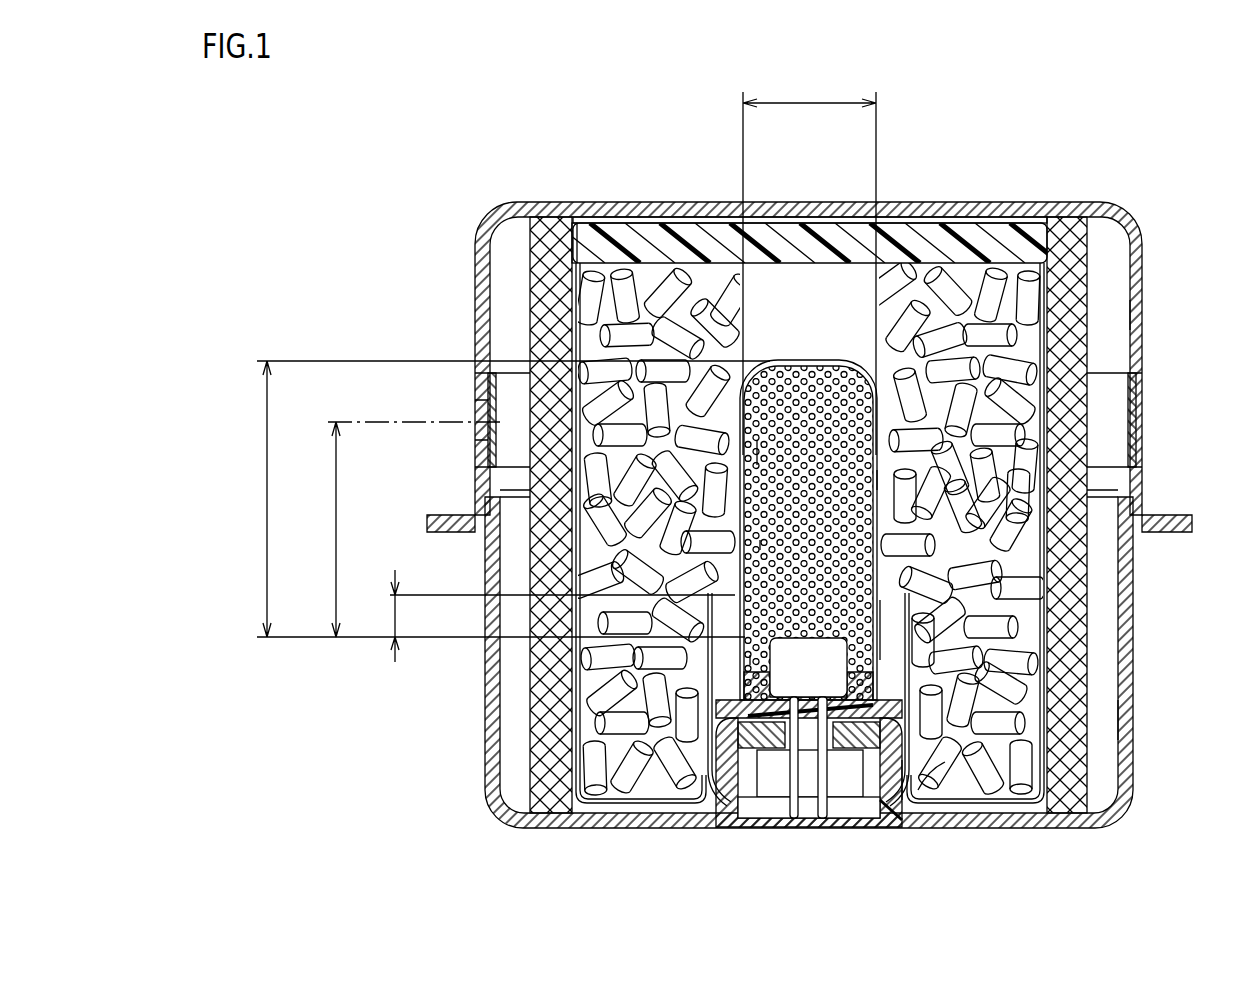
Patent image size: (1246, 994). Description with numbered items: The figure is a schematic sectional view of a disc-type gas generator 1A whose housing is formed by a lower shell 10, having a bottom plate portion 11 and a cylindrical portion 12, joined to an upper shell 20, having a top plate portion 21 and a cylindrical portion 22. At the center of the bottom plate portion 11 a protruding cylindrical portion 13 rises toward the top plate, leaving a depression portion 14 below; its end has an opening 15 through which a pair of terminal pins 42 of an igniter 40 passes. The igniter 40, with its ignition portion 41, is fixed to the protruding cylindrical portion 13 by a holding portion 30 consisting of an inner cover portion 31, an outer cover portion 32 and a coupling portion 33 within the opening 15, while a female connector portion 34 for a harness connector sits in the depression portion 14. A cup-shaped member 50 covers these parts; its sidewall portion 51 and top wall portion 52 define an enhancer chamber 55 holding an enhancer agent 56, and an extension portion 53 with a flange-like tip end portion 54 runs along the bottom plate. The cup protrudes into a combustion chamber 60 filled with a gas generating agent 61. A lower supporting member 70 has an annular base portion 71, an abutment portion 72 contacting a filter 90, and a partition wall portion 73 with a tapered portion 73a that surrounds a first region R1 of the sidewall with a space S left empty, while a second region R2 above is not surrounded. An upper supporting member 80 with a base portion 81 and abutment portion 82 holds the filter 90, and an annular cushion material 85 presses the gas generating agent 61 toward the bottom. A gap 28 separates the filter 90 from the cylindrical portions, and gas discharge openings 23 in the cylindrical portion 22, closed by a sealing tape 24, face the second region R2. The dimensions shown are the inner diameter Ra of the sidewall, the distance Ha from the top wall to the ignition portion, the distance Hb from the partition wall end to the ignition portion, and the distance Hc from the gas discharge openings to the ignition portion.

The disc-type gas generator 1A is at (458, 140).
The lower shell 10 is at (1146, 831).
The bottom plate portion 11 is at (1028, 830).
The cylindrical portion 12 is at (1128, 722).
The protruding cylindrical portion 13 is at (745, 805).
The depression portion 14 is at (758, 790).
The opening 15 is at (828, 790).
The upper shell 20 is at (1153, 206).
The top plate portion 21 is at (1020, 210).
The cylindrical portion 22 is at (1135, 316).
The gas discharge openings 23 is at (1136, 424).
The sealing tape 24 is at (1130, 375).
The gap 28 is at (515, 748).
The holding portion 30 is at (958, 794).
The inner cover portion 31 is at (870, 693).
The outer cover portion 32 is at (878, 805).
The coupling portion 33 is at (798, 790).
The female connector portion 34 is at (845, 790).
The igniter 40 is at (888, 575).
The ignition portion 41 is at (830, 665).
The terminal pins 42 is at (780, 780).
The cup-shaped member 50 is at (809, 428).
The sidewall portion 51 is at (890, 477).
The top wall portion 52 is at (815, 355).
The extension portion 53 is at (955, 770).
The tip end portion 54 is at (930, 800).
The enhancer chamber 55 is at (757, 452).
The enhancer agent 56 is at (852, 378).
The combustion chamber 60 is at (806, 468).
The gas generating agent 61 is at (952, 293).
The lower supporting member 70 is at (731, 575).
The base portion 71 is at (628, 805).
The abutment portion 72 is at (575, 783).
The partition wall portion 73 is at (700, 785).
The tapered portion 73a is at (710, 690).
The upper supporting member 80 is at (733, 201).
The base portion 81 is at (635, 215).
The abutment portion 82 is at (572, 242).
The cushion material 85 is at (697, 225).
The filter 90 is at (548, 313).
The distance Ha is at (501, 499).
The distance Hb is at (549, 616).
The distance Hc is at (399, 529).
The inner diameter Ra is at (809, 263).
The first region R1 is at (755, 660).
The second region R2 is at (765, 545).
The space S is at (893, 631).